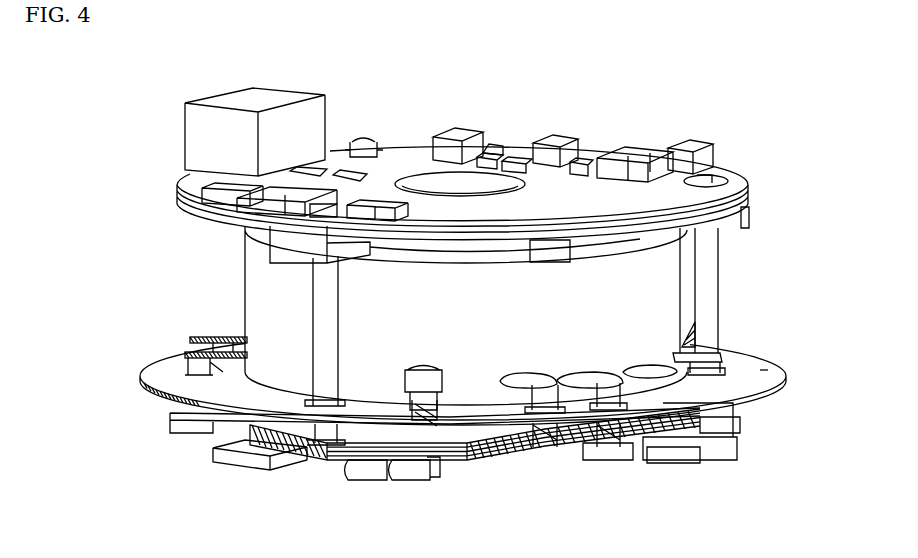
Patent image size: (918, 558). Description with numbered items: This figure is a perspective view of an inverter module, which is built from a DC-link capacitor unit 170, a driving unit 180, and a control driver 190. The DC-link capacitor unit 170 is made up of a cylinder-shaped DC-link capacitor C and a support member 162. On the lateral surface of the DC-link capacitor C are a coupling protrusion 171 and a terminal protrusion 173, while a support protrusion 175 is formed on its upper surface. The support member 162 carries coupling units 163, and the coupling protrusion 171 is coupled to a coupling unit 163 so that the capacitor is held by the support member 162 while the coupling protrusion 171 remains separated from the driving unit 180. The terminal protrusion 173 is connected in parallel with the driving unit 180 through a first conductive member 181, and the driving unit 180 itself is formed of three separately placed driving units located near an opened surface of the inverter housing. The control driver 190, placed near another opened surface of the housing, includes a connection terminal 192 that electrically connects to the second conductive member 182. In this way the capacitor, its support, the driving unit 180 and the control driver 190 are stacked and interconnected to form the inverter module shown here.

The control driver 190 is at (500, 140).
The support protrusion 175 is at (548, 250).
The connection terminal 192 is at (752, 213).
The second conductive member 182 is at (323, 284).
The DC-link capacitor unit 170 is at (88, 288).
The DC-link capacitor C is at (243, 320).
The support member 162 is at (167, 370).
The terminal protrusion 173 is at (224, 358).
The coupling unit 163 is at (424, 394).
The coupling protrusion 171 is at (412, 400).
The driving unit 180 is at (542, 462).
The first conductive member 181 is at (610, 430).